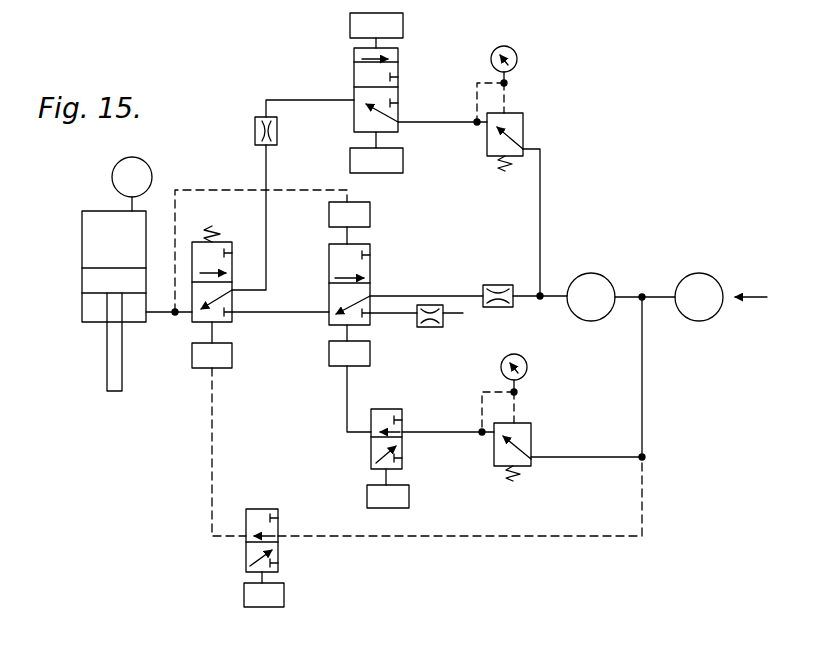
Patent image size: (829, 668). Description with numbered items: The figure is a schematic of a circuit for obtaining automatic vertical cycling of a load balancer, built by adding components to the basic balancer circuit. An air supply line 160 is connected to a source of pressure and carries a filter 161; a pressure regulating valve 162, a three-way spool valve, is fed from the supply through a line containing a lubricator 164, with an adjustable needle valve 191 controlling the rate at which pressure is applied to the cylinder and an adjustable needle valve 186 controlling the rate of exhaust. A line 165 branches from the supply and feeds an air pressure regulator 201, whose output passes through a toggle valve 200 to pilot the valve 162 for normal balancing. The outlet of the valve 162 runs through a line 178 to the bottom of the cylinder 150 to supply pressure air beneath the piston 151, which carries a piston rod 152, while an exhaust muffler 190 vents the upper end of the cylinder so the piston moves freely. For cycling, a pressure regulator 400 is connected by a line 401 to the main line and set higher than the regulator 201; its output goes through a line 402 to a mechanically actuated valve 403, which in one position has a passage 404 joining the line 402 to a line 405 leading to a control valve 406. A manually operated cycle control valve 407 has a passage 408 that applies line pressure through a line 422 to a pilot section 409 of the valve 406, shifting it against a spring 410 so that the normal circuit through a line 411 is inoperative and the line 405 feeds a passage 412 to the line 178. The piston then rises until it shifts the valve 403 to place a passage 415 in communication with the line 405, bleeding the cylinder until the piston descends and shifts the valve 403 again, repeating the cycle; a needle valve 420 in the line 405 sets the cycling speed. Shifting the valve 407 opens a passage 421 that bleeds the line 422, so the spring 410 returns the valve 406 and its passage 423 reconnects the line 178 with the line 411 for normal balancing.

The cylinder 150 is at (82, 240).
The piston 151 is at (92, 284).
The piston rod 152 is at (107, 363).
The air supply line 160 is at (757, 294).
The filter 161 is at (693, 277).
The pressure regulating valve 162 is at (371, 264).
The lubricator 164 is at (591, 273).
The line 165 is at (643, 393).
The line 178 is at (164, 315).
The adjustable needle valve 186 is at (428, 327).
The exhaust muffler 190 is at (113, 176).
The adjustable needle valve 191 is at (486, 285).
The toggle valve 200 is at (371, 447).
The air pressure regulator 201 is at (531, 433).
The pressure regulator 400 is at (523, 120).
The line 401 is at (541, 161).
The line 402 is at (432, 122).
The mechanically actuated valve 403 is at (354, 72).
The passage 404 is at (367, 109).
The line 405 is at (266, 104).
The control valve 406 is at (240, 227).
The cycle control valve 407 is at (278, 528).
The passage 408 is at (268, 535).
The pilot section 409 is at (196, 368).
The spring 410 is at (211, 229).
The line 411 is at (252, 313).
The passage 412 is at (220, 296).
The passage 415 is at (390, 57).
The needle valve 420 is at (255, 132).
The passage 421 is at (270, 551).
The line 422 is at (209, 441).
The passage 423 is at (205, 273).